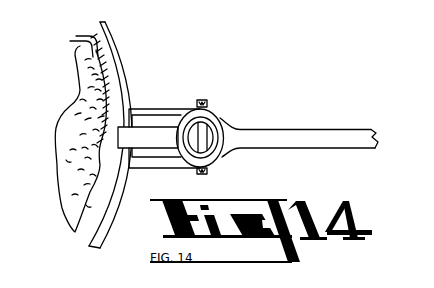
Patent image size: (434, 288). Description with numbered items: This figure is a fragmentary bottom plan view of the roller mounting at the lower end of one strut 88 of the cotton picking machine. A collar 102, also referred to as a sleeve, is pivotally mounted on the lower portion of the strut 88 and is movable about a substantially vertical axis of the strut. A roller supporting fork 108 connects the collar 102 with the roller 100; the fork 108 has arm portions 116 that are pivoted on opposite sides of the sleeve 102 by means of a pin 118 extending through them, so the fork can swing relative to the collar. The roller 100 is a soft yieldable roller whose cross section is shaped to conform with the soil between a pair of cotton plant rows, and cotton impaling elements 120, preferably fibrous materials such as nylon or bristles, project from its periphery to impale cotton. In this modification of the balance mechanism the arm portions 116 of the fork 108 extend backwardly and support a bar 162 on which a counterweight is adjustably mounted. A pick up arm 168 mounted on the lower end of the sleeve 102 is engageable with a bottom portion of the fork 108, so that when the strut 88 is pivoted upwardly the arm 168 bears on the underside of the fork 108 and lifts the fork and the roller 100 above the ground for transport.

The strut 88 is at (218, 123).
The roller 100 is at (64, 120).
The collar 102 is at (222, 158).
The roller supporting fork 108 is at (128, 81).
The arm portions 116 is at (167, 108).
The pin 118 is at (203, 173).
The cotton impaling elements 120 is at (70, 41).
The bar 162 is at (339, 138).
The pick up arm 168 is at (117, 135).